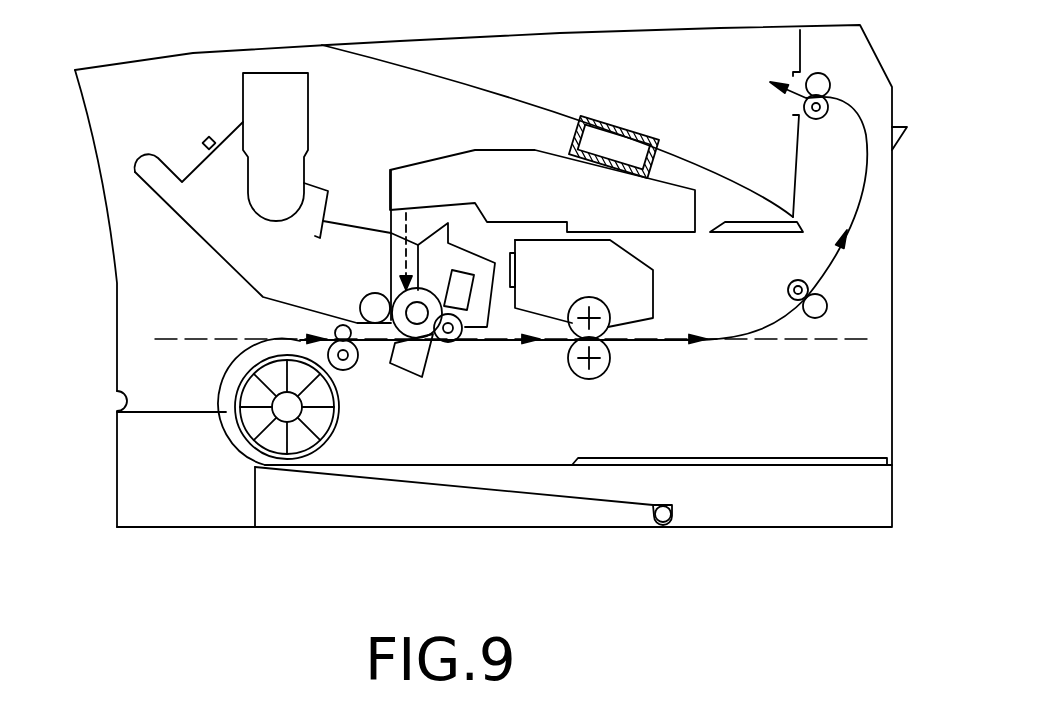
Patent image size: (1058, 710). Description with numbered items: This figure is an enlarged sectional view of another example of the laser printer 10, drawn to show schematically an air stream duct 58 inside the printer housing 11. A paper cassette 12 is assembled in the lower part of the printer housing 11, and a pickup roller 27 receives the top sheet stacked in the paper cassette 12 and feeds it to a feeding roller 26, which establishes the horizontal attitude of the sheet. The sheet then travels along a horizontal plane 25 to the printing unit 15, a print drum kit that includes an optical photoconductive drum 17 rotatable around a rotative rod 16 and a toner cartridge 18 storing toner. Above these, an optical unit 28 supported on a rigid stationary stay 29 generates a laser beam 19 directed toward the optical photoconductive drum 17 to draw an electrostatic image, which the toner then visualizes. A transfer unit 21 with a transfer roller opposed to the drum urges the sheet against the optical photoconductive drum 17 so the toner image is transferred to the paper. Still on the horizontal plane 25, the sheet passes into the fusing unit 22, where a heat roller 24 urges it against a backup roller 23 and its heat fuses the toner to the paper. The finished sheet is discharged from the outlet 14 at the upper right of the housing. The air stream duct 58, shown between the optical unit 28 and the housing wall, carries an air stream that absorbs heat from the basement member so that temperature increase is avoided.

The laser printer 10 is at (88, 167).
The printer housing 11 is at (117, 285).
The paper cassette 12 is at (117, 466).
The outlet 14 is at (793, 115).
The printing unit 15 is at (190, 222).
The rotative rod 16 is at (425, 322).
The optical photoconductive drum 17 is at (397, 293).
The toner cartridge 18 is at (243, 90).
The laser beam 19 is at (402, 230).
The transfer unit 21 is at (416, 380).
The fusing unit 22 is at (653, 298).
The backup roller 23 is at (607, 372).
The heat roller 24 is at (607, 298).
The horizontal plane 25 is at (203, 338).
The feeding roller 26 is at (348, 369).
The pickup roller 27 is at (330, 437).
The optical unit 28 is at (502, 148).
The stationary stay 29 is at (698, 235).
The air stream duct 58 is at (615, 120).